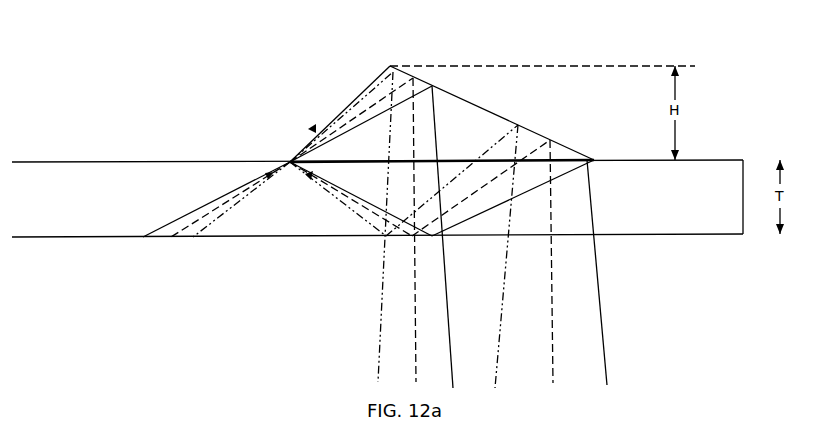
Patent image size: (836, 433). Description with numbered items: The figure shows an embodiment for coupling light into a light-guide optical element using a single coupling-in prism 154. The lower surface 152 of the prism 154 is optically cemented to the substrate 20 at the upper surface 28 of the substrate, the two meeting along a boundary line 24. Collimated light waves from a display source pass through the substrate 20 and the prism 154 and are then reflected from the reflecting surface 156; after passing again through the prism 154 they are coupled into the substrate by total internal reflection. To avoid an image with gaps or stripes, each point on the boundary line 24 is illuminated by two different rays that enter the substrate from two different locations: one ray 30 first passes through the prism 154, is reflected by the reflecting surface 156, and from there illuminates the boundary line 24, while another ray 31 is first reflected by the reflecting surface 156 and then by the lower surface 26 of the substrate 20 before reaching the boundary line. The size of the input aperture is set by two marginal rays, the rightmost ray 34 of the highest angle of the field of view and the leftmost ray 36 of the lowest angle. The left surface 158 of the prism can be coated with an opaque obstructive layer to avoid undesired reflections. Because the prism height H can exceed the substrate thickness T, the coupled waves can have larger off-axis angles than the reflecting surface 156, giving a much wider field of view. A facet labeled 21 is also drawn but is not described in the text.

The substrate 20 is at (377, 204).
The prism facet 21 is at (595, 158).
The boundary line 24 is at (290, 162).
The lower surface 26 is at (25, 238).
The upper surface 28 is at (98, 162).
The ray 30 is at (413, 325).
The ray 31 is at (553, 318).
The rightmost ray 34 is at (607, 372).
The leftmost ray 36 is at (384, 277).
The lower surface 152 is at (458, 158).
The coupling-in prism 154 is at (497, 116).
The reflecting surface 156 is at (540, 134).
The left surface 158 is at (333, 118).